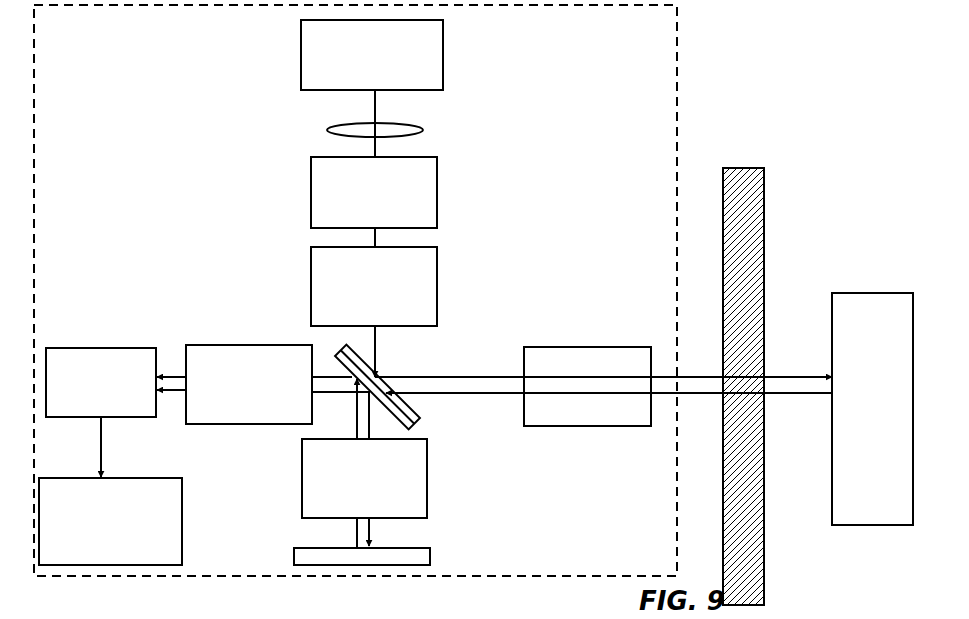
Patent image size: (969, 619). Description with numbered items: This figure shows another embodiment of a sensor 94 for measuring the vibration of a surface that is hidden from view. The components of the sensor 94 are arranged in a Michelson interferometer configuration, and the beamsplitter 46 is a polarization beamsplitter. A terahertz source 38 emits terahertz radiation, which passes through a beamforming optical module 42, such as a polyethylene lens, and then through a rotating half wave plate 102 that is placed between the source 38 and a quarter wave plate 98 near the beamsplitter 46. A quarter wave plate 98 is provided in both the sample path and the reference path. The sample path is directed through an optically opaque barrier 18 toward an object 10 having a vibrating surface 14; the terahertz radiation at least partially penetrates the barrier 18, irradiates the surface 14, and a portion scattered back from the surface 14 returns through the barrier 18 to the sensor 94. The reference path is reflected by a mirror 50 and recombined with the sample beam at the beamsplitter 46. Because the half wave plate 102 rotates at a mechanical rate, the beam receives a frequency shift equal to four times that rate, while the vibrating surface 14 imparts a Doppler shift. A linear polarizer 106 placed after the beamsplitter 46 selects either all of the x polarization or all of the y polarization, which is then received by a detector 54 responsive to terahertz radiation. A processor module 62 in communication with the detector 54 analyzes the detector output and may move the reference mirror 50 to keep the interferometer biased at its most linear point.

The sensor 94 is at (677, 75).
The terahertz source 38 is at (360, 79).
The beamforming optical module 42 is at (422, 129).
The rotating half wave plate 102 is at (357, 223).
The quarter wave plate 98 is at (362, 308).
The beamsplitter 46 is at (415, 412).
The mirror 50 is at (430, 557).
The linear polarizer 106 is at (232, 416).
The detector 54 is at (89, 404).
The processor module 62 is at (98, 554).
The barrier 18 is at (764, 220).
The vibrating surface 14 is at (832, 318).
The object 10 is at (861, 427).